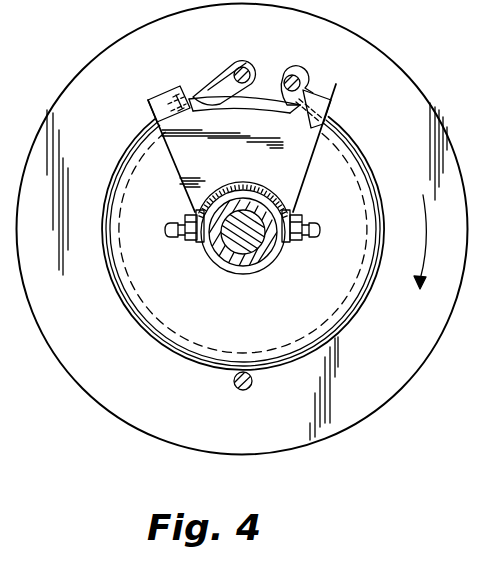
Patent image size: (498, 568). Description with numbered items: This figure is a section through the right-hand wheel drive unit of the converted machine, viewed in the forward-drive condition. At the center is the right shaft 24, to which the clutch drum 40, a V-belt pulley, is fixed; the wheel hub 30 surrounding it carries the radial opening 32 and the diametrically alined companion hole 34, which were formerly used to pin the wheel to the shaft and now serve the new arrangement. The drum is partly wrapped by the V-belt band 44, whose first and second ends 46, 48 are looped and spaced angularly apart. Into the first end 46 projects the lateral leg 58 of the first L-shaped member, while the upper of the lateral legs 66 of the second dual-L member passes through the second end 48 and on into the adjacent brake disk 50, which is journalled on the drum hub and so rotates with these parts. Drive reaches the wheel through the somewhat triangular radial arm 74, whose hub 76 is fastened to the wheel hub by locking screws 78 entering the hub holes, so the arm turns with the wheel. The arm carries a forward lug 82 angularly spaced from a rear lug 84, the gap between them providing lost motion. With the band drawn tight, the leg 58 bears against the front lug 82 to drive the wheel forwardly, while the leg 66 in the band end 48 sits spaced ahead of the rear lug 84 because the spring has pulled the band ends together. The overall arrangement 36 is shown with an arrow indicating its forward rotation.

The right shaft 24 is at (238, 240).
The wheel hub 30 is at (265, 258).
The radial opening 32 is at (205, 255).
The companion hole 34 is at (283, 260).
The wheel assembly 36 is at (407, 399).
The clutch drum 40 is at (173, 350).
The V-belt band 44 is at (353, 143).
The first end 46 is at (303, 77).
The second end 48 is at (233, 62).
The right brake disk 50 is at (437, 322).
The lateral leg 58 is at (292, 72).
The lateral legs 66 is at (244, 66).
The radial arm 74 is at (293, 178).
The hub 76 is at (258, 186).
The locking screws 78 is at (185, 243).
The forward lug 82 is at (336, 86).
The rear lug 84 is at (160, 100).